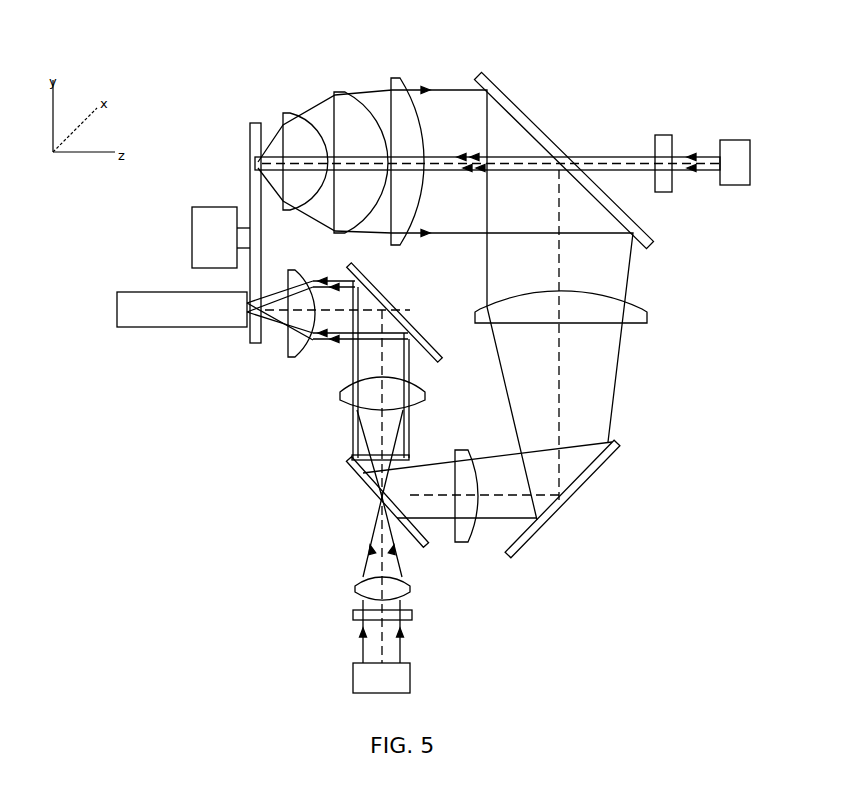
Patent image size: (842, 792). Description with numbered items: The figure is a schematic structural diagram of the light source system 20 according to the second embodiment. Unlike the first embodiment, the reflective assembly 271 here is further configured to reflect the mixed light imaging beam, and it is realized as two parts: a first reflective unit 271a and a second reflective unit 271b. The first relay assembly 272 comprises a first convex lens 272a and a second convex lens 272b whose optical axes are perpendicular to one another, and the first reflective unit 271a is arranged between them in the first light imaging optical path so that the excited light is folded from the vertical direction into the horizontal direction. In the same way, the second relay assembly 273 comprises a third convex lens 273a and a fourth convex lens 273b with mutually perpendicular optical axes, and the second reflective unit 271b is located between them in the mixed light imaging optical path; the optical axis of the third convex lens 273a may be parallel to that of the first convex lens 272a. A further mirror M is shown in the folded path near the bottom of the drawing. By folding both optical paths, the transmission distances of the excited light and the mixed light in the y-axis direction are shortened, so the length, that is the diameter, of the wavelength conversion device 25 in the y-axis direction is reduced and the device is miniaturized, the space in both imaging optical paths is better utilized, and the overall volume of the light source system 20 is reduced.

The light source system 20 is at (133, 38).
The wavelength conversion device 25 is at (257, 165).
The reflective assembly 271 is at (626, 456).
The first reflective unit 271a is at (585, 486).
The second reflective unit 271b is at (390, 302).
The first relay assembly 272 is at (666, 301).
The first convex lens 272a is at (632, 323).
The second convex lens 272b is at (460, 543).
The second relay assembly 273 is at (271, 365).
The third convex lens 273a is at (338, 396).
The fourth convex lens 273b is at (298, 350).
The mirror M is at (340, 463).